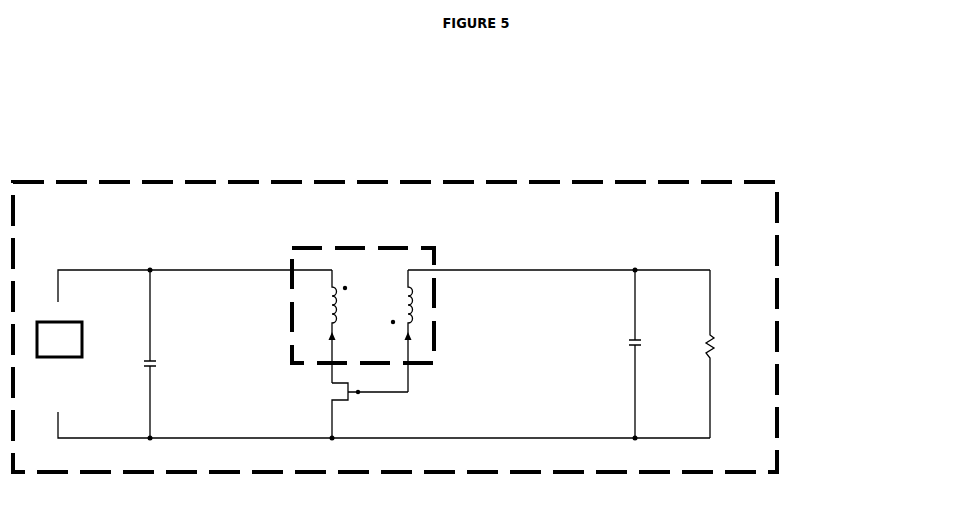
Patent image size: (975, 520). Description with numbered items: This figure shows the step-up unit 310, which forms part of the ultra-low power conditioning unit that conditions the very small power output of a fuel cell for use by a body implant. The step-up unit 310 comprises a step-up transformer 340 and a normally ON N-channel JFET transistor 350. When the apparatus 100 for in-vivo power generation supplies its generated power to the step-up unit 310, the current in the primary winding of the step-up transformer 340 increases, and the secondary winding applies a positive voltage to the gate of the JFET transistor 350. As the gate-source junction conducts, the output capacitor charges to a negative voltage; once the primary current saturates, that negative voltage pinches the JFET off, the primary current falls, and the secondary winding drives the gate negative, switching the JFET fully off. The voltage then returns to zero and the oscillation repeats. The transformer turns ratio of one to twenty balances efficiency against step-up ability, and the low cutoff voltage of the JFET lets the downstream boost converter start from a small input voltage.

The apparatus 100 is at (53, 357).
The step-up unit 310 is at (472, 332).
The step-up transformer 340 is at (348, 247).
The normally ON N-channel JFET transistor 350 is at (342, 404).